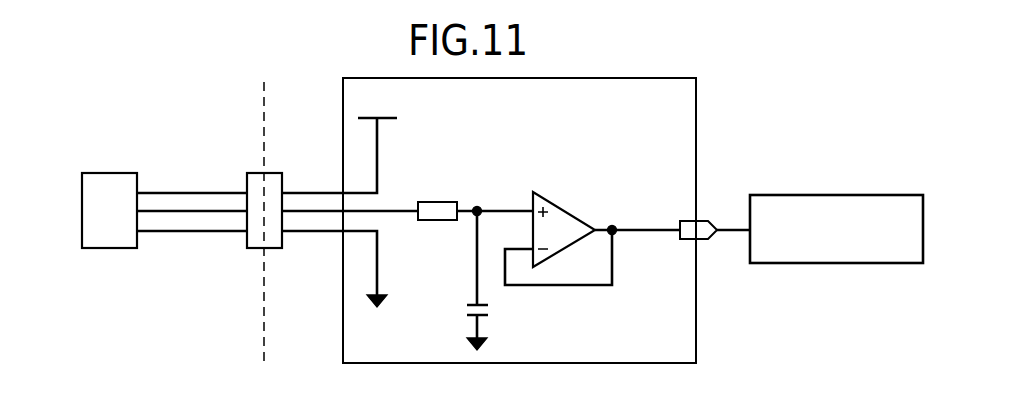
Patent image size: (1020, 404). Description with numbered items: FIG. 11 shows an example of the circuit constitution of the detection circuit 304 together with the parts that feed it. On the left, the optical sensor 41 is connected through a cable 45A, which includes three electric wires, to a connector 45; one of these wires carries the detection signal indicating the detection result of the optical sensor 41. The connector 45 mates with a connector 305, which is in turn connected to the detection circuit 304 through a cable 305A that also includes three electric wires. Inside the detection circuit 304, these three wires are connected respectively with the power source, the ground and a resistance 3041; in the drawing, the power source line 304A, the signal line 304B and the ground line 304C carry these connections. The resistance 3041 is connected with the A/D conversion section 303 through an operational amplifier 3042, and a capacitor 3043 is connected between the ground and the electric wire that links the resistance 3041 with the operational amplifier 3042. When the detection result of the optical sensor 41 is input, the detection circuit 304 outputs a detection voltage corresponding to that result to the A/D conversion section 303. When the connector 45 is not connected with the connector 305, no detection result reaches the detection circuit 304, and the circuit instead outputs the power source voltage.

The optical sensor 41 is at (113, 173).
The cable 45A is at (170, 183).
The connector 45 is at (257, 173).
The connector 305 is at (273, 173).
The cable 305A is at (315, 243).
The detection circuit 304 is at (647, 78).
The power supply line (Vcc) 304A is at (378, 137).
The signal line 304B is at (400, 210).
The ground line (GND) 304C is at (380, 272).
The resistance 3041 is at (447, 202).
The operational amplifier 3042 is at (570, 212).
The capacitor 3043 is at (492, 308).
The A/D conversion section 303 is at (847, 195).